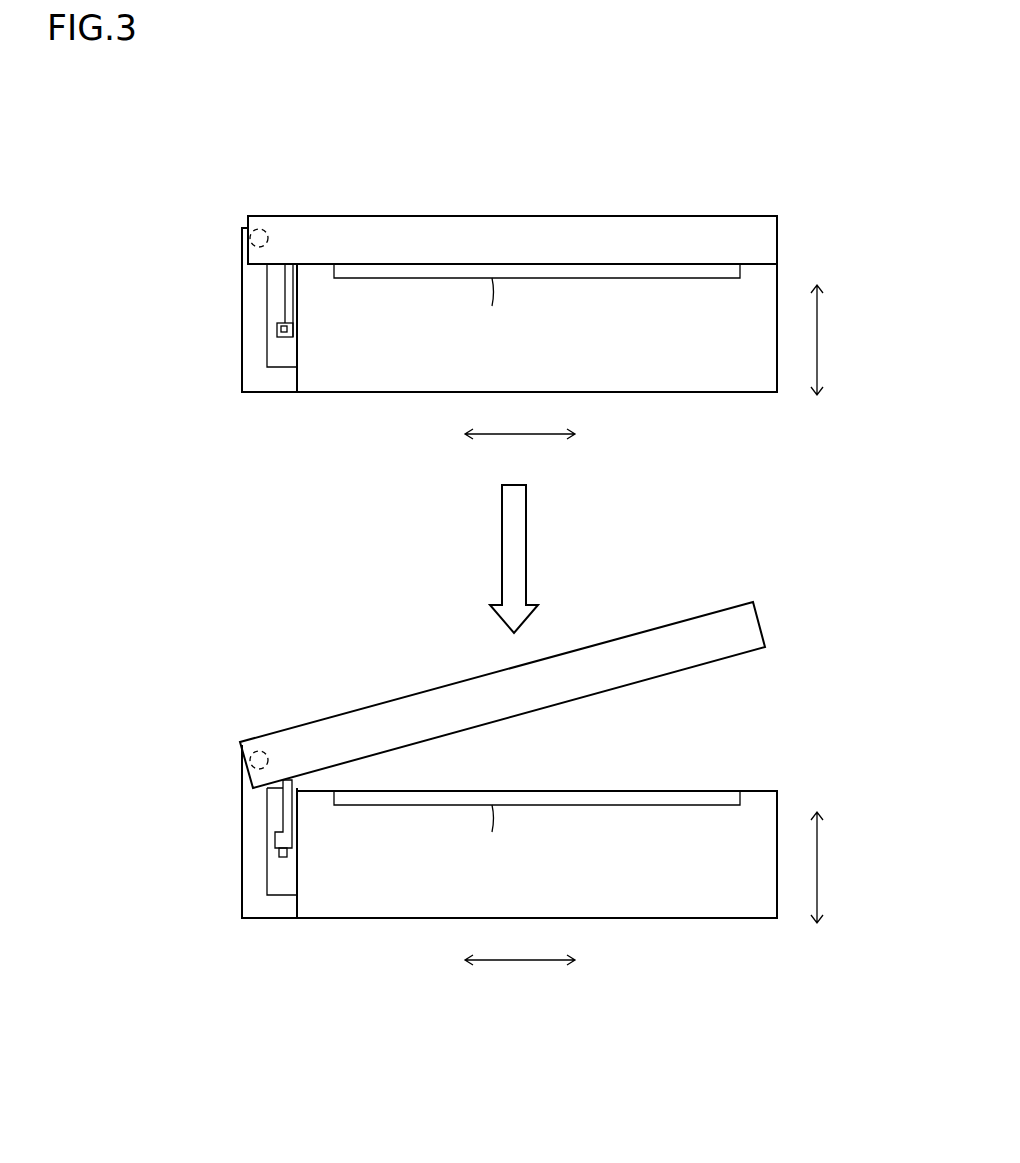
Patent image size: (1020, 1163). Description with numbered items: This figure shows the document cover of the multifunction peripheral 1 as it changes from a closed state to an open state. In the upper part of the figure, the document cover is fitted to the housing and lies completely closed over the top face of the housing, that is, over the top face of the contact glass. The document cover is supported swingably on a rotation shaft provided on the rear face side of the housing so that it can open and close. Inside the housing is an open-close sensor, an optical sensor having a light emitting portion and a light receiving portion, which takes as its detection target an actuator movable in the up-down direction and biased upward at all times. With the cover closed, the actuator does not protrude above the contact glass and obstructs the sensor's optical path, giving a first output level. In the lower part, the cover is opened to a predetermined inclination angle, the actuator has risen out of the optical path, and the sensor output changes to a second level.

The electronic apparatus 1 is at (513, 556).